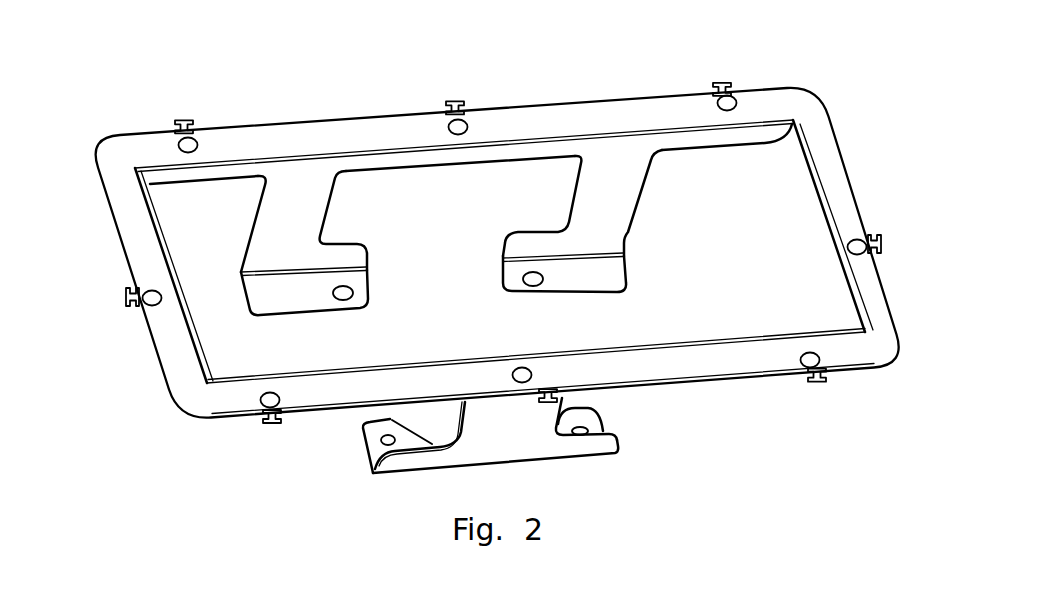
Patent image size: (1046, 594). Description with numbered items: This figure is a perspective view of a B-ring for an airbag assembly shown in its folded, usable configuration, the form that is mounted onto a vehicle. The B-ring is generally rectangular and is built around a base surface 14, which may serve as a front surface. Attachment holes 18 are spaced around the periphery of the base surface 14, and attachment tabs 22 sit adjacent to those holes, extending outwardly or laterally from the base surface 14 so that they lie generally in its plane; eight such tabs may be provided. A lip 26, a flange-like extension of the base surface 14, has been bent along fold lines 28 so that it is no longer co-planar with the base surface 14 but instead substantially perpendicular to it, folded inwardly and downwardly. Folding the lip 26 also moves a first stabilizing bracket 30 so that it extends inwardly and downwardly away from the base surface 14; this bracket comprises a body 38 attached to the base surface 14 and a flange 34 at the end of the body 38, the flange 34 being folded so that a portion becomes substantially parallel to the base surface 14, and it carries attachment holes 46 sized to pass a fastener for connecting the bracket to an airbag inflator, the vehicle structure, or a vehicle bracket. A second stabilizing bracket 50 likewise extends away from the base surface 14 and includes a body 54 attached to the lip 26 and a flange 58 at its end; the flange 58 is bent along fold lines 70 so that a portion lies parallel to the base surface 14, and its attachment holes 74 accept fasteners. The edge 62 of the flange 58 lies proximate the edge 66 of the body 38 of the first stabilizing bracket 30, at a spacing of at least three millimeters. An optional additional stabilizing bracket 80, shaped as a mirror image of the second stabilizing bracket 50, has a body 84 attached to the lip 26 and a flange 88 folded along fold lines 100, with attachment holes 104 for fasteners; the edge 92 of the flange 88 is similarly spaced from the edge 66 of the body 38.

The base surface 14 is at (823, 138).
The attachment holes 18 is at (194, 145).
The attachment tabs 22 is at (187, 121).
The lip 26 is at (428, 160).
The fold lines 28 is at (311, 162).
The first stabilizing bracket 30 is at (482, 452).
The flange 34 is at (362, 432).
The body 38 is at (496, 436).
The attachment holes 46 is at (389, 437).
The second stabilizing bracket 50 is at (553, 240).
The body 54 is at (595, 203).
The flange 58 is at (575, 286).
The edge 62 is at (503, 282).
The edge 66 is at (466, 418).
The fold lines 70 is at (498, 263).
The attachment holes 74 is at (533, 287).
The additional stabilizing bracket 80 is at (337, 255).
The body 84 is at (281, 228).
The flange 88 is at (279, 304).
The edge 92 is at (369, 289).
The fold lines 100 is at (234, 278).
The attachment holes 104 is at (344, 295).